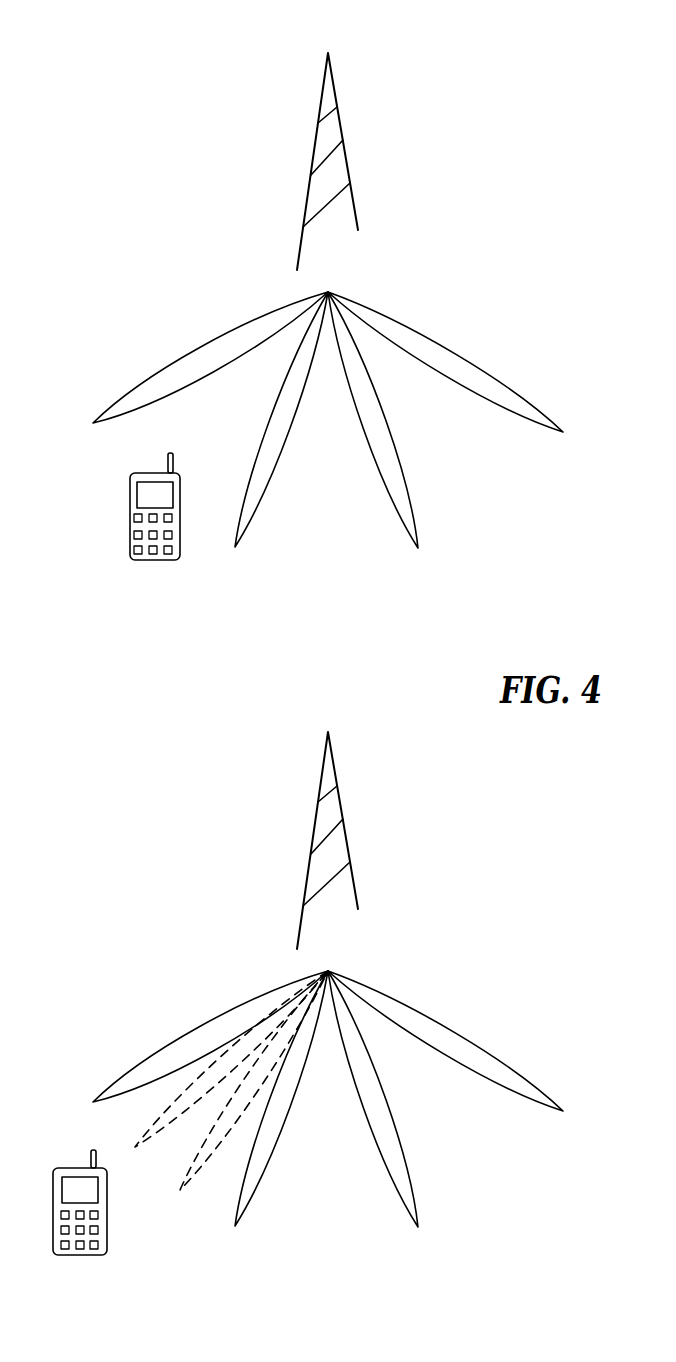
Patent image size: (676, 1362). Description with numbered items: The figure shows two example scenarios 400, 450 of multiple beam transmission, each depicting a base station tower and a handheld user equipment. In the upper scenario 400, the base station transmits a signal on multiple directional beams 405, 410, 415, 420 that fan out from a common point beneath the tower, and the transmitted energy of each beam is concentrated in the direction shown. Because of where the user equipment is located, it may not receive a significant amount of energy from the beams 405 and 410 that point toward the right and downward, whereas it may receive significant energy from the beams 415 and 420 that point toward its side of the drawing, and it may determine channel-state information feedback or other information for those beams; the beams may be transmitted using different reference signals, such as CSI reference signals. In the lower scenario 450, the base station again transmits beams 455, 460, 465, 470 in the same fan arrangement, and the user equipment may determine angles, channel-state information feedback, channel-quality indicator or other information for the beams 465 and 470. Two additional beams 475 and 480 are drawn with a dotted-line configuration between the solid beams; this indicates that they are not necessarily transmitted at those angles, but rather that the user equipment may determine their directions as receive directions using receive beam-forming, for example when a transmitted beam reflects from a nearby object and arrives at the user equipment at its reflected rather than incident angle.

The example scenario 400 is at (103, 140).
The example scenario 450 is at (107, 817).
The beam 405 is at (456, 352).
The beam 410 is at (418, 549).
The beam 415 is at (235, 549).
The beam 420 is at (198, 352).
The beam 455 is at (456, 1030).
The beam 460 is at (418, 1228).
The beam 465 is at (235, 1228).
The beam 470 is at (191, 1032).
The beam 475 is at (180, 1190).
The beam 480 is at (135, 1150).